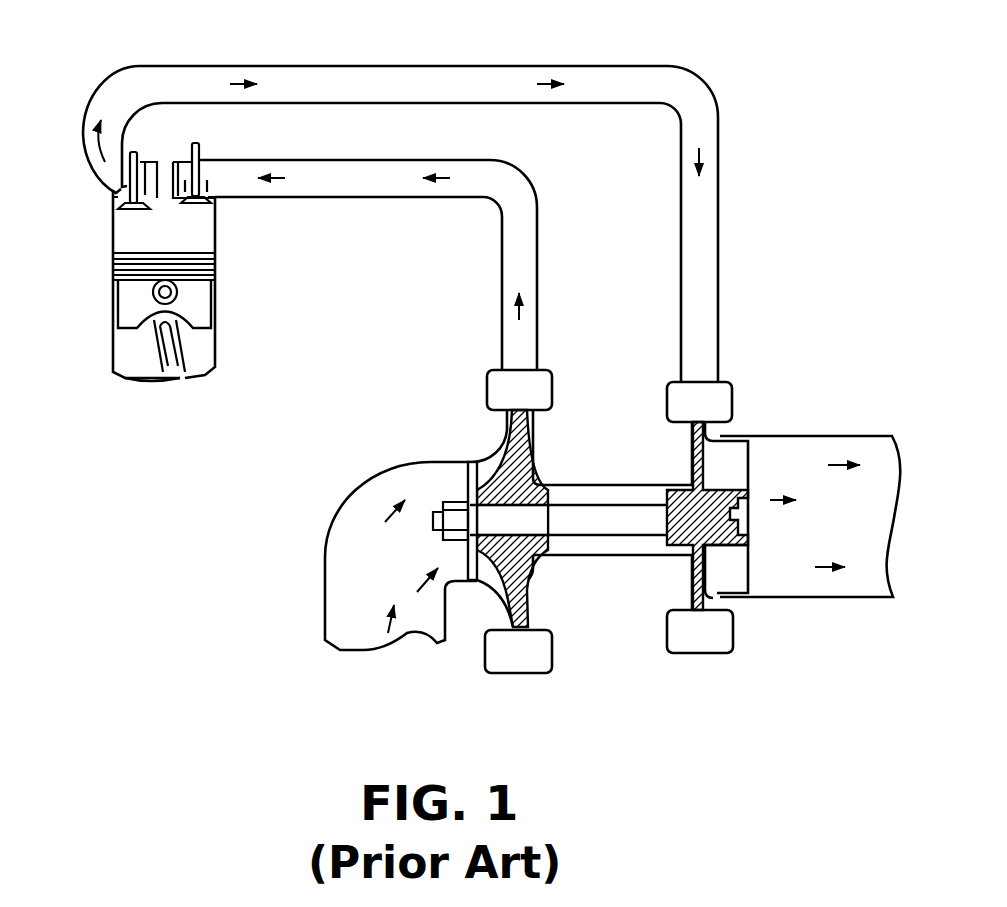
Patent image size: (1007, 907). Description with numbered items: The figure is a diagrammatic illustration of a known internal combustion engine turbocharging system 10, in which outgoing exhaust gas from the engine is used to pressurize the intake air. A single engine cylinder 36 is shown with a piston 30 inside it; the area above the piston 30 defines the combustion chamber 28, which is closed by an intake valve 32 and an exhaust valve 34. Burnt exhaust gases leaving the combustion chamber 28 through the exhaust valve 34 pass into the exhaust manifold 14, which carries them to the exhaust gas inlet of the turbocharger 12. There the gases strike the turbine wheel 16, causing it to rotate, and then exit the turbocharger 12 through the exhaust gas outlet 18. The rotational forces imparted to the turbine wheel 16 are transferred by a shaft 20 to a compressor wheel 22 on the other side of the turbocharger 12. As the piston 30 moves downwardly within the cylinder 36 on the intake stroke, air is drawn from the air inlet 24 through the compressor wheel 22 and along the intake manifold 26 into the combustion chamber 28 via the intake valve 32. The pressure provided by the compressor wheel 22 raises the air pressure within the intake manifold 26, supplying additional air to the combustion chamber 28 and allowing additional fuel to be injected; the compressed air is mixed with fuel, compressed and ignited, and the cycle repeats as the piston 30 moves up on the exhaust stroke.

The internal combustion engine turbocharging system 10 is at (747, 44).
The turbocharger 12 is at (662, 557).
The exhaust manifold 14 is at (683, 337).
The turbine wheel 16 is at (690, 486).
The exhaust gas outlet 18 is at (846, 537).
The shaft 20 is at (604, 525).
The compressor wheel 22 is at (520, 472).
The air inlet 24 is at (396, 571).
The intake manifold 26 is at (540, 240).
The combustion chamber 28 is at (207, 213).
The piston 30 is at (203, 302).
The intake valve 32 is at (205, 185).
The exhaust valve 34 is at (128, 214).
The cylinder 36 is at (112, 246).